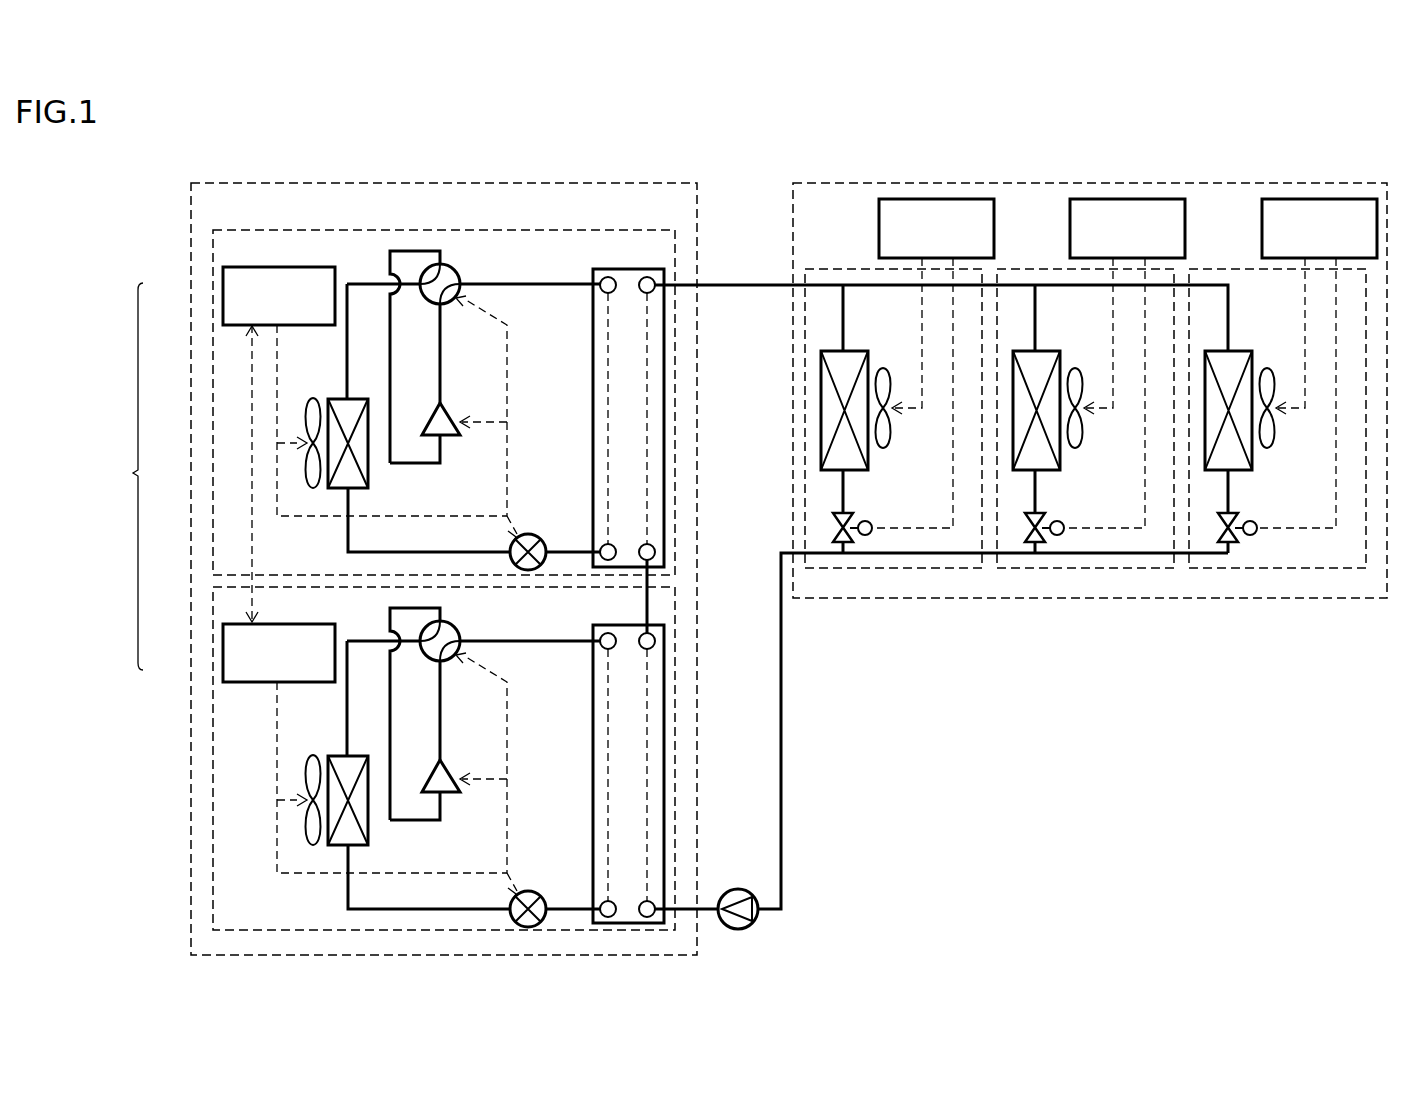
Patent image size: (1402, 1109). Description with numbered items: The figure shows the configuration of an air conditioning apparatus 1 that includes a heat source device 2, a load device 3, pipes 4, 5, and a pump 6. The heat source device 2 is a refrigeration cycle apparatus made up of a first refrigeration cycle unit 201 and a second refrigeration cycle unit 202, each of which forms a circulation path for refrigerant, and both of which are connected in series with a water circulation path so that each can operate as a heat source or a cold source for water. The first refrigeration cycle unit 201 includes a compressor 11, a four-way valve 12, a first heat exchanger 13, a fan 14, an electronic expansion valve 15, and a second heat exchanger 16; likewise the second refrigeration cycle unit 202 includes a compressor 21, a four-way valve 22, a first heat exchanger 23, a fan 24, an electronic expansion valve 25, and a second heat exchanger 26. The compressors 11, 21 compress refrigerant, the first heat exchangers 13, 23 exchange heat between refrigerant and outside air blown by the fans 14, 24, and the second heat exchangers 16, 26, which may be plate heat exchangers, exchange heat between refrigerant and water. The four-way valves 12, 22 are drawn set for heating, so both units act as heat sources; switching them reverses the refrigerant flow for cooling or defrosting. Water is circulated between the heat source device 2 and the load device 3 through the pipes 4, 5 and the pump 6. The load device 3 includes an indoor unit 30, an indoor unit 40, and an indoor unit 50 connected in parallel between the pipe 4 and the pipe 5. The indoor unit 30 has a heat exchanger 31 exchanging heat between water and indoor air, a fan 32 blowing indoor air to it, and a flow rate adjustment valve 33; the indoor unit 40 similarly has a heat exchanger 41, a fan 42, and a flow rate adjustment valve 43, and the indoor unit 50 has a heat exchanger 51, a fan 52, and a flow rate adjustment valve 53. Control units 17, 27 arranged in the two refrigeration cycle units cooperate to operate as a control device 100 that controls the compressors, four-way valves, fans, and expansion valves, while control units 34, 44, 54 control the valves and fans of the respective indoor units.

The air conditioning apparatus 1 is at (1387, 169).
The heat source device 2 is at (214, 183).
The load device 3 is at (814, 183).
The pipe 4 is at (742, 283).
The pipe 5 is at (781, 722).
The pump 6 is at (741, 887).
The control device 100 is at (120, 476).
The first refrigeration cycle unit 201 is at (213, 247).
The second refrigeration cycle unit 202 is at (213, 907).
The compressor 11 is at (455, 437).
The four-way valve 12 is at (455, 270).
The first heat exchanger 13 is at (350, 398).
The fan 14 is at (307, 428).
The electronic expansion valve 15 is at (541, 535).
The second heat exchanger 16 is at (628, 268).
The control unit 17 is at (223, 296).
The compressor 21 is at (455, 794).
The four-way valve 22 is at (455, 627).
The first heat exchanger 23 is at (350, 755).
The fan 24 is at (307, 785).
The electronic expansion valve 25 is at (541, 892).
The second heat exchanger 26 is at (628, 624).
The control unit 27 is at (223, 651).
The indoor unit 30 is at (915, 569).
The heat exchanger 31 is at (830, 350).
The fan 32 is at (890, 426).
The flow rate adjustment valve 33 is at (848, 515).
The control unit 34 is at (879, 232).
The indoor unit 40 is at (1107, 569).
The heat exchanger 41 is at (1023, 350).
The fan 42 is at (1082, 426).
The flow rate adjustment valve 43 is at (1040, 515).
The control unit 44 is at (1070, 232).
The indoor unit 50 is at (1300, 569).
The heat exchanger 51 is at (1215, 350).
The fan 52 is at (1274, 426).
The flow rate adjustment valve 53 is at (1233, 515).
The control unit 54 is at (1262, 232).